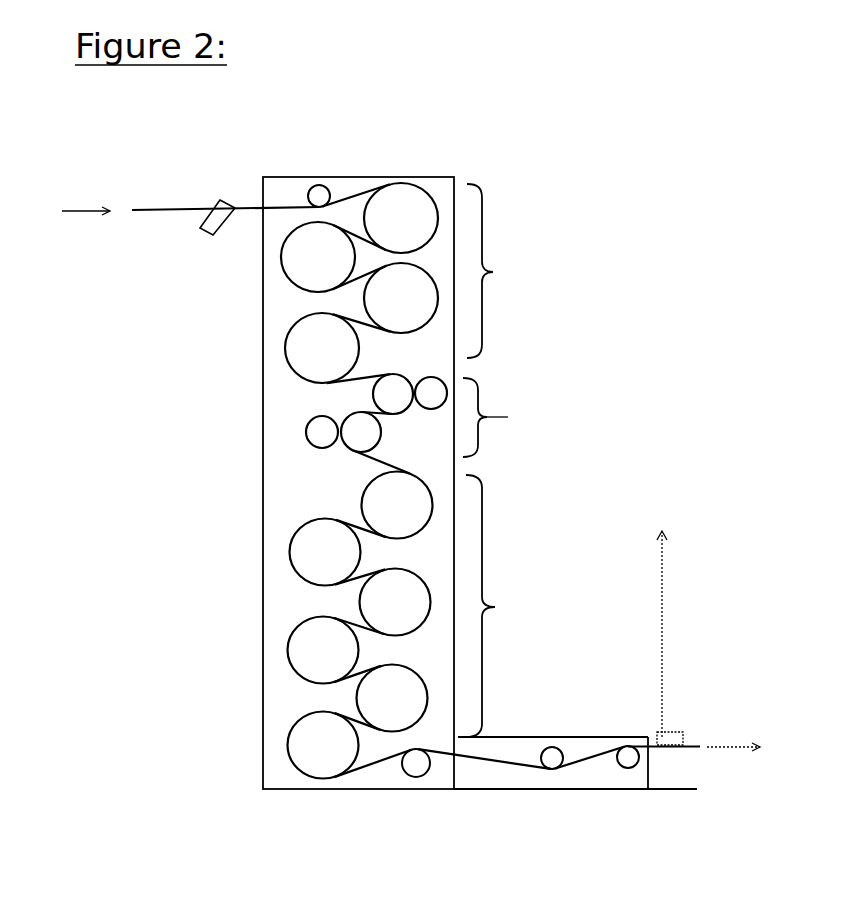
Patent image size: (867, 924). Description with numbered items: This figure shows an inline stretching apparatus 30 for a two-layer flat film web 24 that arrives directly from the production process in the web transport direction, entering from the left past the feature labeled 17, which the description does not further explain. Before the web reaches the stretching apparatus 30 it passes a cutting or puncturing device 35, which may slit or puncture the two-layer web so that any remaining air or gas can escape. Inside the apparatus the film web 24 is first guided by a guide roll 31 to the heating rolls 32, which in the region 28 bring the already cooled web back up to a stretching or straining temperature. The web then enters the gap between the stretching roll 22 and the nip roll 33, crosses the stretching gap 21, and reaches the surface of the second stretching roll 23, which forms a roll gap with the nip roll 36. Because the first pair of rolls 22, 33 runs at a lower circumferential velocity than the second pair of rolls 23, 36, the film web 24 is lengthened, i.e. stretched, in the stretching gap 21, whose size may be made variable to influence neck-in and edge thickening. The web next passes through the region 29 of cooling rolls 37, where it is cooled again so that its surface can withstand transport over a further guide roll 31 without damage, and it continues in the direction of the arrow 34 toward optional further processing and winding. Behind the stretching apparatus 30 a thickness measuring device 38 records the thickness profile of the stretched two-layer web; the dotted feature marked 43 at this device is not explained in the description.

The material feed direction 17 is at (89, 210).
The film web 24 is at (176, 208).
The cutting or puncturing device 35 is at (207, 233).
The guide roll 31 is at (324, 189).
The heating rolls 32 is at (412, 228).
The stretching apparatus 30 is at (522, 210).
The region of the heating rolls 28 is at (407, 283).
The nip roll 33 is at (447, 389).
The stretching gap 21 is at (308, 401).
The stretching roll 22 is at (404, 404).
The stretching roll 23 is at (372, 442).
The nip roll 36 is at (312, 438).
The cooling rolls 37 is at (408, 515).
The region of the cooling rolls 29 is at (419, 625).
The measurement direction 43 is at (663, 623).
The thickness measuring device 38 is at (668, 731).
The arrow 34 is at (730, 747).